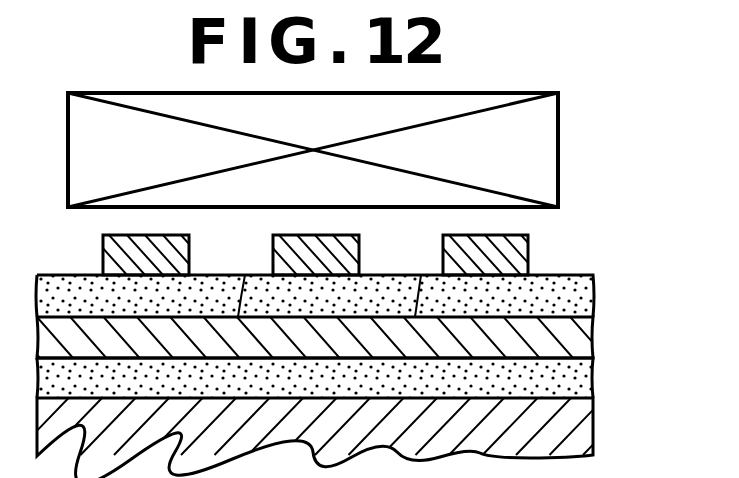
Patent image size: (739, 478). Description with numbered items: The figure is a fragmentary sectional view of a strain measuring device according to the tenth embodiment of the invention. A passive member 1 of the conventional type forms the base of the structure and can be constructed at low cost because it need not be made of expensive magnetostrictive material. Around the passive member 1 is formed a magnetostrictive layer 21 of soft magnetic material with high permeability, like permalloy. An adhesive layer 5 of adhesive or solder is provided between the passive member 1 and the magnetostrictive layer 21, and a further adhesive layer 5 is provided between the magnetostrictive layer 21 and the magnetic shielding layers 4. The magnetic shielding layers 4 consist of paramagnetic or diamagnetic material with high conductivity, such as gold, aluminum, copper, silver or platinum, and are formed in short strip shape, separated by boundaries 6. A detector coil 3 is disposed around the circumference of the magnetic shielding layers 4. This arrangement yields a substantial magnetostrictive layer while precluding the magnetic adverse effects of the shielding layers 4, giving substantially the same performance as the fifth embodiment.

The passive member 1 is at (593, 426).
The detector coil 3 is at (558, 148).
The magnetic shielding layer 4 is at (103, 252).
The adhesive layer 5 is at (593, 300).
The boundaries 6 is at (253, 252).
The magnetostrictive layer 21 is at (593, 341).